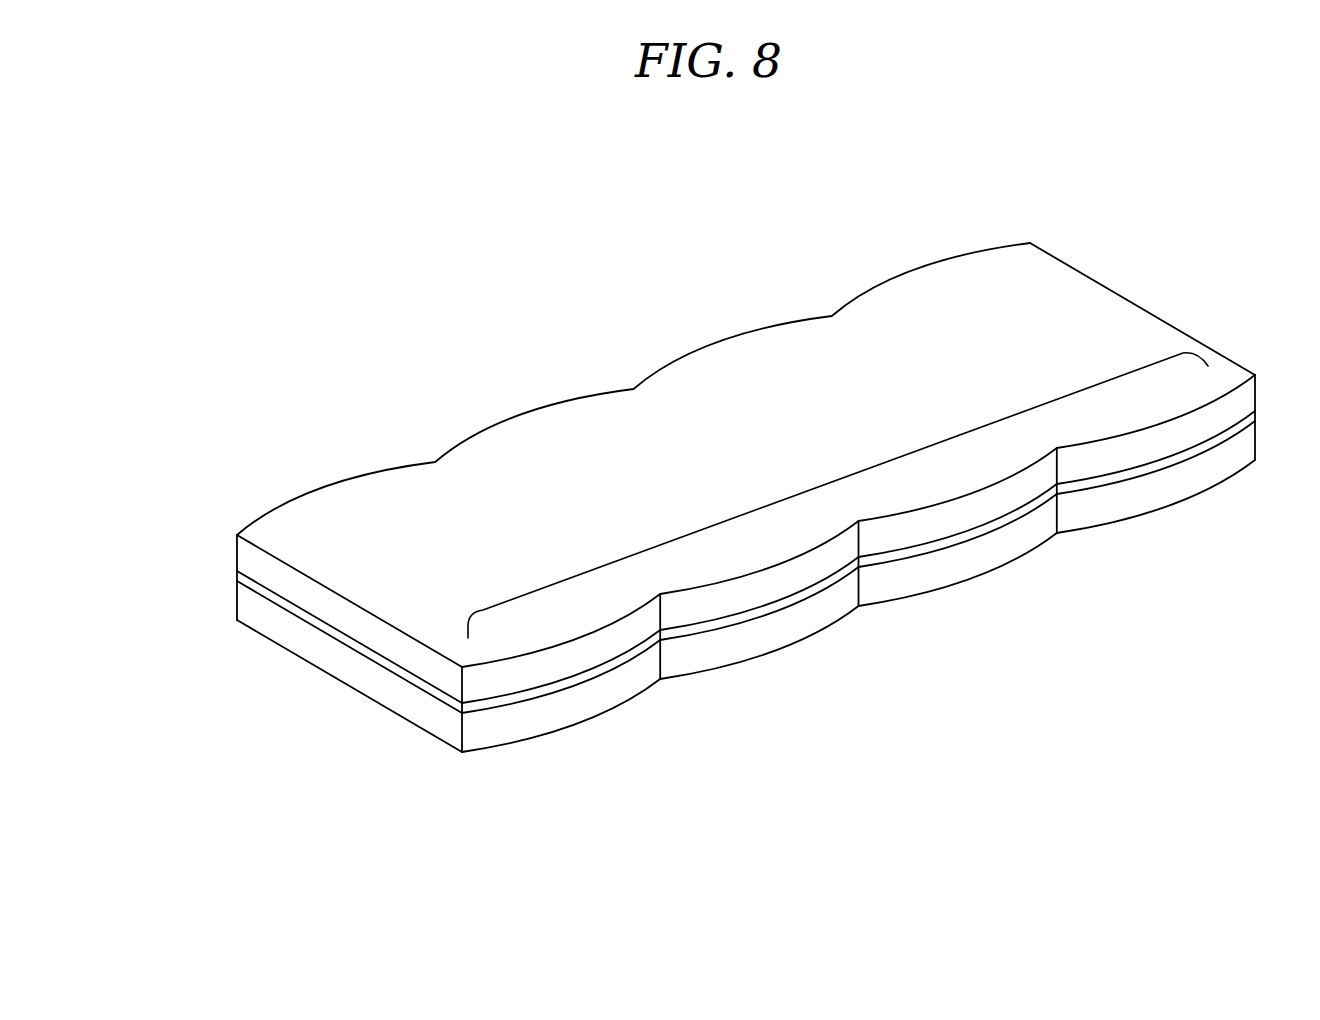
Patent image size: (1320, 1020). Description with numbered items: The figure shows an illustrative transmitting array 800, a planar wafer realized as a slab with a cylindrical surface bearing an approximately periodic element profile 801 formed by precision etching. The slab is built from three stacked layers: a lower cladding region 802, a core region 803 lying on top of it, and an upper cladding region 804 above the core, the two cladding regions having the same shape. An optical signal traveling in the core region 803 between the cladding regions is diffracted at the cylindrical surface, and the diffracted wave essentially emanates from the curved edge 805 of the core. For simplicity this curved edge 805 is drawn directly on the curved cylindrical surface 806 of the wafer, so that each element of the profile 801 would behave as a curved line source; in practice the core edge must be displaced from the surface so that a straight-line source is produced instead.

The transmitting array 800 is at (651, 279).
The approximately periodic element profile 801 is at (826, 483).
The lower cladding region 802 is at (445, 722).
The core region 803 is at (397, 670).
The upper cladding region 804 is at (252, 566).
The curved edge of the core 805 is at (507, 703).
The curved cylindrical surface 806 is at (617, 685).